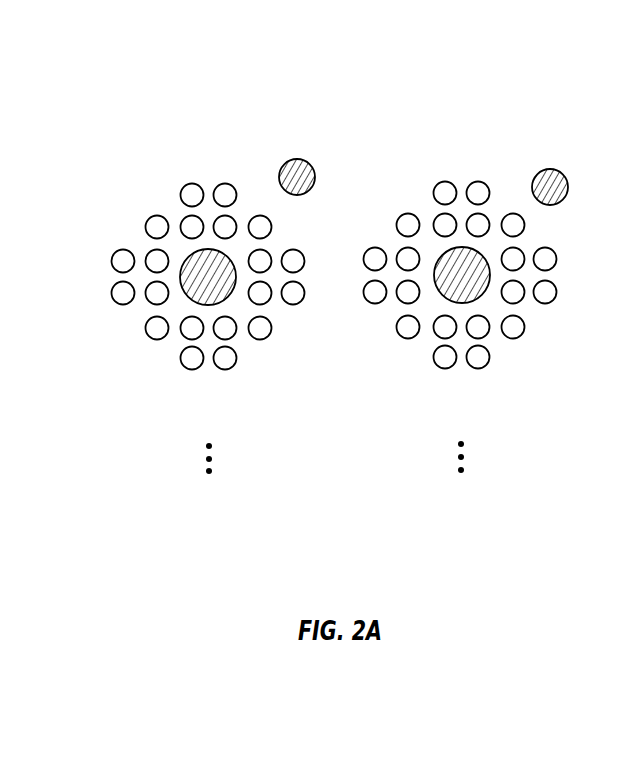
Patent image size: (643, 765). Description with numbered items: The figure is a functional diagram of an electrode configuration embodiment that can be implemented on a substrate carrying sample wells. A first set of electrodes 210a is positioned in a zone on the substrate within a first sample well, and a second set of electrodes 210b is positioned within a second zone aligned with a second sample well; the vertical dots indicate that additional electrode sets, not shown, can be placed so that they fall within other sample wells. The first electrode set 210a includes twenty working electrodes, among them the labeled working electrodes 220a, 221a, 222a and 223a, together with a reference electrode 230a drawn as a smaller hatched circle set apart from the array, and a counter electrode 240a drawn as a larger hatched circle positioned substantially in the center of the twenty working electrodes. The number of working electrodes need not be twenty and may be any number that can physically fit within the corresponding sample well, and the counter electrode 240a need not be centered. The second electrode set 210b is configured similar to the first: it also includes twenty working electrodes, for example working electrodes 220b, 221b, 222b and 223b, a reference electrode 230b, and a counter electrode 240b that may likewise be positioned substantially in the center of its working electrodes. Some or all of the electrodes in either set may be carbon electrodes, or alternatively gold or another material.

The first set of electrodes 210a is at (183, 104).
The second set of electrodes 210b is at (429, 102).
The working electrode 220a is at (121, 250).
The working electrode 220b is at (373, 248).
The working electrode 221a is at (155, 216).
The working electrode 221b is at (407, 214).
The working electrode 222a is at (188, 184).
The working electrode 222b is at (444, 182).
The working electrode 223a is at (228, 184).
The working electrode 223b is at (480, 182).
The reference electrode 230a is at (301, 160).
The reference electrode 230b is at (553, 169).
The counter electrode 240a is at (224, 298).
The counter electrode 240b is at (478, 296).